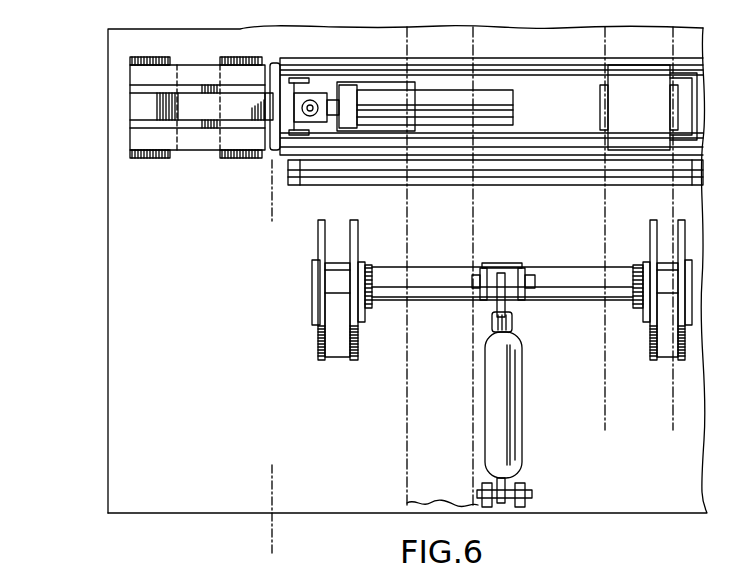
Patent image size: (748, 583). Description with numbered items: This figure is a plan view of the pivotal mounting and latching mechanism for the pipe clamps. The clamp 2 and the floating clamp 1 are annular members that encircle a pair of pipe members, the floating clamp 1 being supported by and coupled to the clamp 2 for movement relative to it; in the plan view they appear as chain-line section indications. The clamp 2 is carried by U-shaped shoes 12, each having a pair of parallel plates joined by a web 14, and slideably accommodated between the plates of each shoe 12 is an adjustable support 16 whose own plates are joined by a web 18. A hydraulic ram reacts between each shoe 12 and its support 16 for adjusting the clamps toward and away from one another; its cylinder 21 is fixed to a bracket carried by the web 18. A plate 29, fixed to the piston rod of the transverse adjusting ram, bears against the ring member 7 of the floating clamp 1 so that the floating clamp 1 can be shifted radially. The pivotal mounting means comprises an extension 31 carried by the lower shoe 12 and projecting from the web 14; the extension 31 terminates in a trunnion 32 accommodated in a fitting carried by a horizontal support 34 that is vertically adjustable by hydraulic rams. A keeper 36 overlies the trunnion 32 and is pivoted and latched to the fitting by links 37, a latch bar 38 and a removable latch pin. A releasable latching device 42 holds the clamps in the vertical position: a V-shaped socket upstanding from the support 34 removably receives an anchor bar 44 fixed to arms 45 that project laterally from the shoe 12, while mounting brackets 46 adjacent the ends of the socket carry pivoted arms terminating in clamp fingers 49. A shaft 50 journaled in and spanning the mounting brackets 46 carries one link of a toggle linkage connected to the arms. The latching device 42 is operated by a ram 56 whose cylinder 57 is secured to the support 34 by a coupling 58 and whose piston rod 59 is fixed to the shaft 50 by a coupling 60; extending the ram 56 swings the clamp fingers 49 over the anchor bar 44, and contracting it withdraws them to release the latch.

The floating clamp 1 is at (600, 440).
The clamp 2 is at (404, 415).
The ring member 7 is at (284, 173).
The U-shaped shoe 12 is at (378, 56).
The web 14 is at (273, 63).
The adjustable support 16 is at (701, 94).
The web 18 is at (560, 122).
The cylinder 21 is at (505, 99).
The plate 29 is at (632, 120).
The extension 31 is at (155, 107).
The trunnion 32 is at (192, 128).
The horizontal support 34 is at (125, 236).
The keeper 36 is at (200, 70).
The link 37 is at (143, 62).
The latch bar 38 is at (226, 60).
The releasable latching device 42 is at (330, 365).
The anchor bar 44 is at (437, 178).
The arm 45 is at (293, 182).
The mounting bracket 46 is at (355, 244).
The clamp finger 49 is at (358, 356).
The shaft 50 is at (437, 300).
The operating ram 56 is at (527, 401).
The cylinder 57 is at (515, 360).
The coupling 58 is at (487, 480).
The piston rod 59 is at (515, 322).
The coupling 60 is at (527, 262).